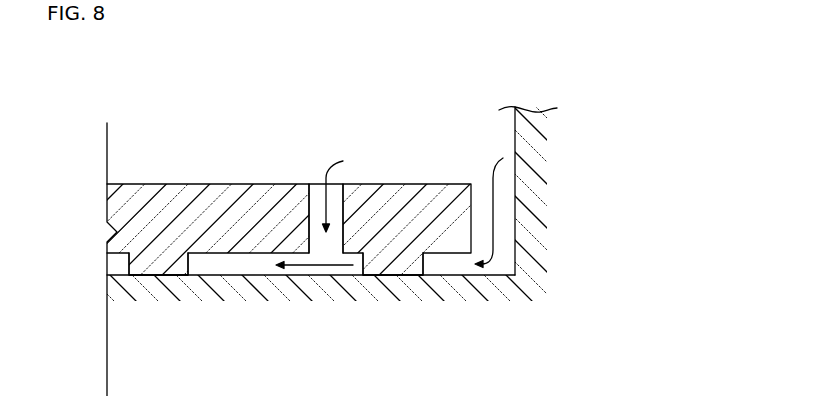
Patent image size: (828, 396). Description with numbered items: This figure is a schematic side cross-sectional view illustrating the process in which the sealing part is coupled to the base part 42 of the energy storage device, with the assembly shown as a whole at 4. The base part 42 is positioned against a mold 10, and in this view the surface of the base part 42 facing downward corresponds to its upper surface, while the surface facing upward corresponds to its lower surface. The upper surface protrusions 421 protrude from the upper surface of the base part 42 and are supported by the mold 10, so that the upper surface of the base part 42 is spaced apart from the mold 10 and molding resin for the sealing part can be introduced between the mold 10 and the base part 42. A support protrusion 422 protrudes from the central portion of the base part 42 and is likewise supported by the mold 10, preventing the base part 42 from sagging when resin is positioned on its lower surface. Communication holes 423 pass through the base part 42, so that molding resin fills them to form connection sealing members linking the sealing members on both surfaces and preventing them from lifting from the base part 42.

The cover assembly 4 is at (73, 83).
The mold 10 is at (333, 288).
The base part 42 is at (246, 198).
The upper surface protrusions 421 is at (398, 263).
The support protrusion 422 is at (158, 267).
The communication holes 423 is at (316, 214).